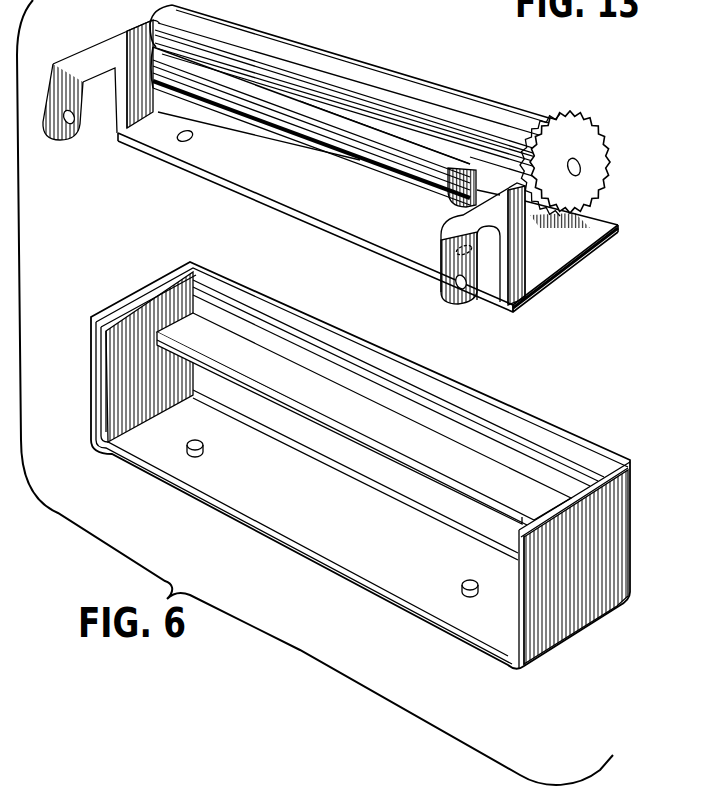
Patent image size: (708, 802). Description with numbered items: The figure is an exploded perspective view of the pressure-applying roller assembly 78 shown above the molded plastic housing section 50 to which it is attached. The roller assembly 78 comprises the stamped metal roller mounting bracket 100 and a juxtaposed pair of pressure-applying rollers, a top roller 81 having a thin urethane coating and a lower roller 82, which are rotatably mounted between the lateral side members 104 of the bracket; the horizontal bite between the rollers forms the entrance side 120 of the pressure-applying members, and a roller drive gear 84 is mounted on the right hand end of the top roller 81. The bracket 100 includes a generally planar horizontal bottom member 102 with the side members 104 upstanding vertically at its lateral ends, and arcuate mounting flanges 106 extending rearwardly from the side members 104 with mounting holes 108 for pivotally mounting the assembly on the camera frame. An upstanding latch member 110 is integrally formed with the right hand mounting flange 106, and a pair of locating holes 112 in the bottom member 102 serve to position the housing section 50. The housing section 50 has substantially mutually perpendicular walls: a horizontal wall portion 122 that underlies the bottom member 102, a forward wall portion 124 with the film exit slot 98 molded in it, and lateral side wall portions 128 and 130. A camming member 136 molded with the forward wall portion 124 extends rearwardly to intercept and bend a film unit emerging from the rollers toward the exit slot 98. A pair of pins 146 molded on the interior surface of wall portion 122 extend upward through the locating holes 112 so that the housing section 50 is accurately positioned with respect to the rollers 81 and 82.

The housing section 50 is at (363, 490).
The pressure-applying roller assembly 78 is at (323, 175).
The top roller 81 is at (363, 78).
The roller 82 is at (326, 147).
The roller drive gear 84 is at (580, 112).
The film exit slot 98 is at (284, 386).
The roller mounting bracket 100 is at (514, 309).
The bottom member 102 is at (302, 197).
The lateral side members 104 is at (118, 40).
The arcuate mounting flanges 106 is at (50, 92).
The mounting holes 108 is at (72, 128).
The latch member 110 is at (472, 205).
The locating holes 112 is at (193, 134).
The entrance side 120 is at (418, 133).
The wall portion 122 is at (268, 498).
The forward wall portion 124 is at (501, 403).
The lateral side wall portion 128 is at (127, 361).
The lateral side wall portion 130 is at (607, 543).
The camming member 136 is at (274, 318).
The pins 146 is at (204, 448).